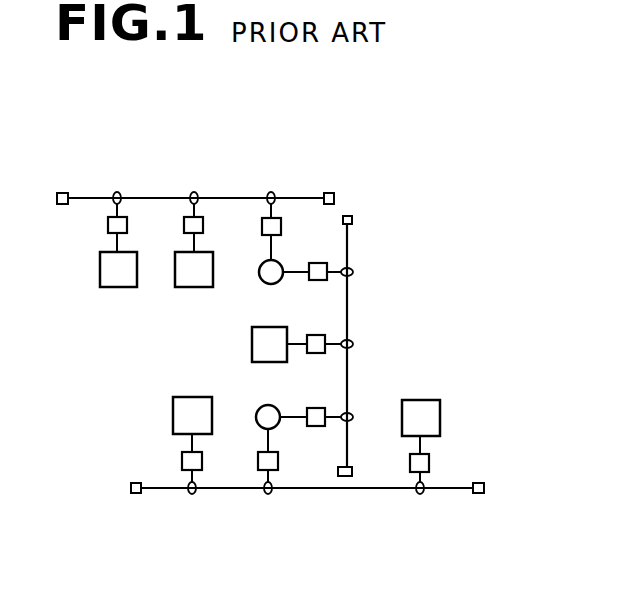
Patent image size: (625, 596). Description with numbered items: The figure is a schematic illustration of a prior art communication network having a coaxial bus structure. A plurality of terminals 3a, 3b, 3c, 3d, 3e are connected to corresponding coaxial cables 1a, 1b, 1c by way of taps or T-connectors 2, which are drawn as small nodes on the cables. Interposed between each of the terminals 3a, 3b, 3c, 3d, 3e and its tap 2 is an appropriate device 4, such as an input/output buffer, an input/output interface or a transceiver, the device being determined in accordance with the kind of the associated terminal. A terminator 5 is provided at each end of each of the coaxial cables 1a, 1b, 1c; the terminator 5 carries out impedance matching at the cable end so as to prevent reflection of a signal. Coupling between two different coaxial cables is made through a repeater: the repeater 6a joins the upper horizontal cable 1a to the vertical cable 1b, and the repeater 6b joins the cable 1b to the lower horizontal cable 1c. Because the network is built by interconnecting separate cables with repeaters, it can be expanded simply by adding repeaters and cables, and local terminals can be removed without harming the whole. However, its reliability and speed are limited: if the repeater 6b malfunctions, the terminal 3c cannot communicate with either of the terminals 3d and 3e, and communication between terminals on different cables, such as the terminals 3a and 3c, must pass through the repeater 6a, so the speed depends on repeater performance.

The coaxial cable 1a is at (244, 197).
The coaxial cable 1b is at (348, 312).
The coaxial cable 1c is at (315, 490).
The tap 2 is at (117, 192).
The device 4 is at (108, 226).
The terminator 5 is at (63, 192).
The terminal 3a is at (112, 285).
The terminal 3b is at (190, 285).
The terminal 3c is at (252, 345).
The terminal 3d is at (187, 405).
The terminal 3e is at (425, 409).
The repeater 6a is at (262, 279).
The repeater 6b is at (265, 406).